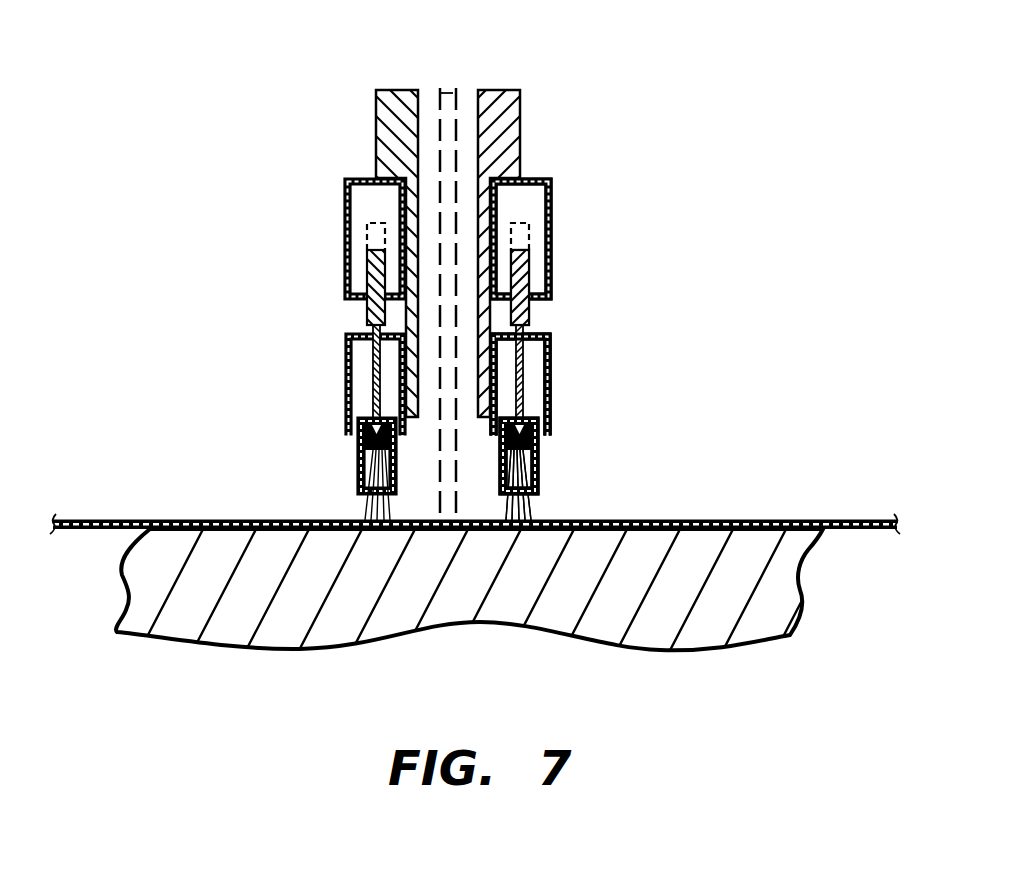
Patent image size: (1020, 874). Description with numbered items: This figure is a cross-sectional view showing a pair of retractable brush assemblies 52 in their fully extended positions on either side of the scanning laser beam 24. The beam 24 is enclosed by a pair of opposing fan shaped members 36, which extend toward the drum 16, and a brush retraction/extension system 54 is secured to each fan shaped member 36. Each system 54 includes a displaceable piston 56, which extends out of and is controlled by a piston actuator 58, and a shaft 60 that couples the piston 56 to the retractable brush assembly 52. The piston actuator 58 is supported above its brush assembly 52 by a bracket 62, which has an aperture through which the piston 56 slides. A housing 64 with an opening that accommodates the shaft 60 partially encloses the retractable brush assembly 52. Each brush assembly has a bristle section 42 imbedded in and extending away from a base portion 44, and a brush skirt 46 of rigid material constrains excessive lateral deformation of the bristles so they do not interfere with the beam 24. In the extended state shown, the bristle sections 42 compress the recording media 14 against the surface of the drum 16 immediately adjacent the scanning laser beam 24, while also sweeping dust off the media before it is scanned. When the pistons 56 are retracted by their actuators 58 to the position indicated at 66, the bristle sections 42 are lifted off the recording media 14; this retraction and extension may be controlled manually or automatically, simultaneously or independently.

The recording media 14 is at (840, 520).
The drum 16 is at (752, 594).
The scanning laser beam 24 is at (448, 88).
The fan shaped member 36 is at (392, 118).
The bristle section 42 is at (530, 513).
The base portion 44 is at (535, 437).
The brush skirt 46 is at (358, 480).
The retractable brush assembly 52 is at (590, 467).
The brush retraction/extension system 54 is at (604, 230).
The displaceable piston 56 is at (518, 270).
The piston actuator 58 is at (552, 189).
The shaft 60 is at (530, 360).
The bracket 62 is at (552, 302).
The housing 64 is at (552, 392).
The retracted piston position 66 is at (540, 210).